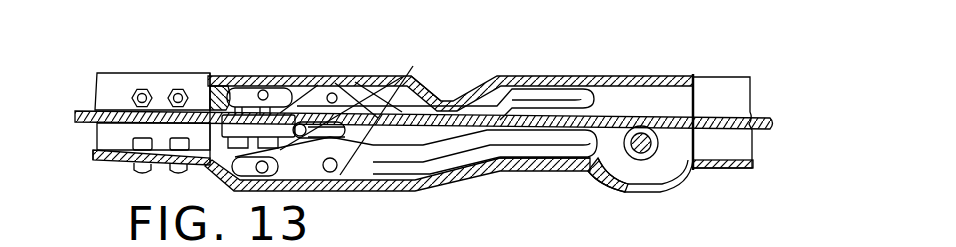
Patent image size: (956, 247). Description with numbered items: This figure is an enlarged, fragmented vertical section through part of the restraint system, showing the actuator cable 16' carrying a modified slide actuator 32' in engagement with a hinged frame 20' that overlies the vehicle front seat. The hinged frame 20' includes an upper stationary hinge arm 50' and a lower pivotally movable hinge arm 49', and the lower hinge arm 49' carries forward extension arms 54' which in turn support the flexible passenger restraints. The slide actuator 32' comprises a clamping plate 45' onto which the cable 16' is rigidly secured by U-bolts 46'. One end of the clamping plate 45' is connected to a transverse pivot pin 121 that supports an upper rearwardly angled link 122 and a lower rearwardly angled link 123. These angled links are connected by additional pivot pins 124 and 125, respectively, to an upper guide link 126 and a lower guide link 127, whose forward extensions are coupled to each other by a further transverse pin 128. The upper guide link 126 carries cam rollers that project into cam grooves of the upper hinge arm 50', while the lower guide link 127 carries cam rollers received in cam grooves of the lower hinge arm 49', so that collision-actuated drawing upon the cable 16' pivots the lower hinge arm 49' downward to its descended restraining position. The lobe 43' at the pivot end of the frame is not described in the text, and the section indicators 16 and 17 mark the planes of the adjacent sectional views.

The hinged frame 20' is at (449, 99).
The actuator cable 16' is at (435, 101).
The upper stationary hinge arm 50' is at (447, 108).
The pivot lobe 43' is at (649, 166).
The lower pivotally movable hinge arm 49' is at (545, 182).
The slide actuator 32' is at (154, 106).
The forward extension arm 54' is at (94, 173).
The U-bolt 46' is at (221, 75).
The upper guide link 126 is at (269, 89).
The upper rearwardly angled link 122 is at (333, 92).
The clamping plate 45' is at (346, 112).
The pivot pin 124 is at (376, 71).
The transverse pin 128 is at (419, 84).
The transverse pivot pin 121 is at (292, 149).
The lower guide link 127 is at (262, 177).
The pivot pin 125 is at (337, 173).
The lower rearwardly angled link 123 is at (383, 146).
The section line 17- 17 is at (377, 72).
The section line 16- 16 is at (688, 134).